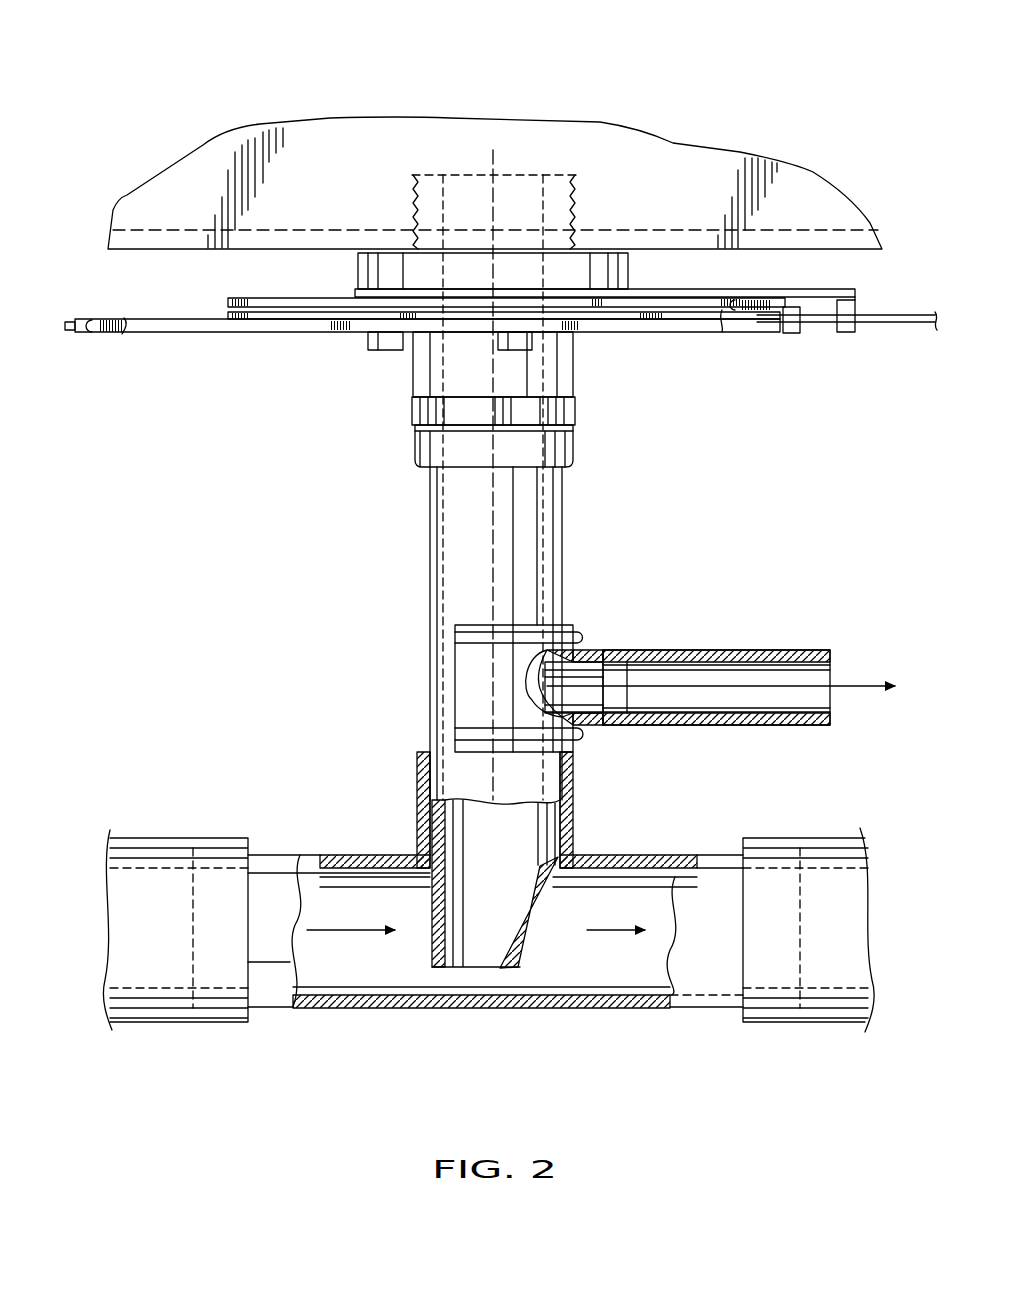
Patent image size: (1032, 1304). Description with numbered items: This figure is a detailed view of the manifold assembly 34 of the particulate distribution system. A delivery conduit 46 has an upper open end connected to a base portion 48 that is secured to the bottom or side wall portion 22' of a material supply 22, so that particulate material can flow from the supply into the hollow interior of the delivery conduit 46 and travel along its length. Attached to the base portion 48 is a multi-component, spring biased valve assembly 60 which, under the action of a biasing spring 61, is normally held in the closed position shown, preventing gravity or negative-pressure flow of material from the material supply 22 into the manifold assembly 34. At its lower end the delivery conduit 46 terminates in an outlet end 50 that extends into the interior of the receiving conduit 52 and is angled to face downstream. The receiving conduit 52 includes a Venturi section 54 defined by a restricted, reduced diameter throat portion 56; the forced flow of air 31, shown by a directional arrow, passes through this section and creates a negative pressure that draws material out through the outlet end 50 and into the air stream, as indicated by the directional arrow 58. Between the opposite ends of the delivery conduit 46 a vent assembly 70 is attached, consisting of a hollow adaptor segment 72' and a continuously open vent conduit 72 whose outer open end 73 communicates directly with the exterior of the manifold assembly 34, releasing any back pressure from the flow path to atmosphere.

The material supply 22 is at (495, 125).
The side wall portion 22' is at (495, 153).
The base portion 48 is at (322, 268).
The valve assembly 60 is at (328, 357).
The biasing spring 61 is at (112, 338).
The directional arrow 58 is at (480, 521).
The delivery conduit 46 is at (430, 605).
The manifold assembly 34 is at (238, 682).
The vent assembly 70 is at (690, 593).
The vent conduit 72 is at (744, 644).
The adaptor segment 72' is at (550, 663).
The outer open end 73 is at (585, 712).
The throat portion 56 is at (388, 885).
The receiving conduit 52 is at (680, 852).
The forced flow of air 31 is at (337, 932).
The Venturi section 54 is at (440, 975).
The outlet end 50 is at (500, 858).